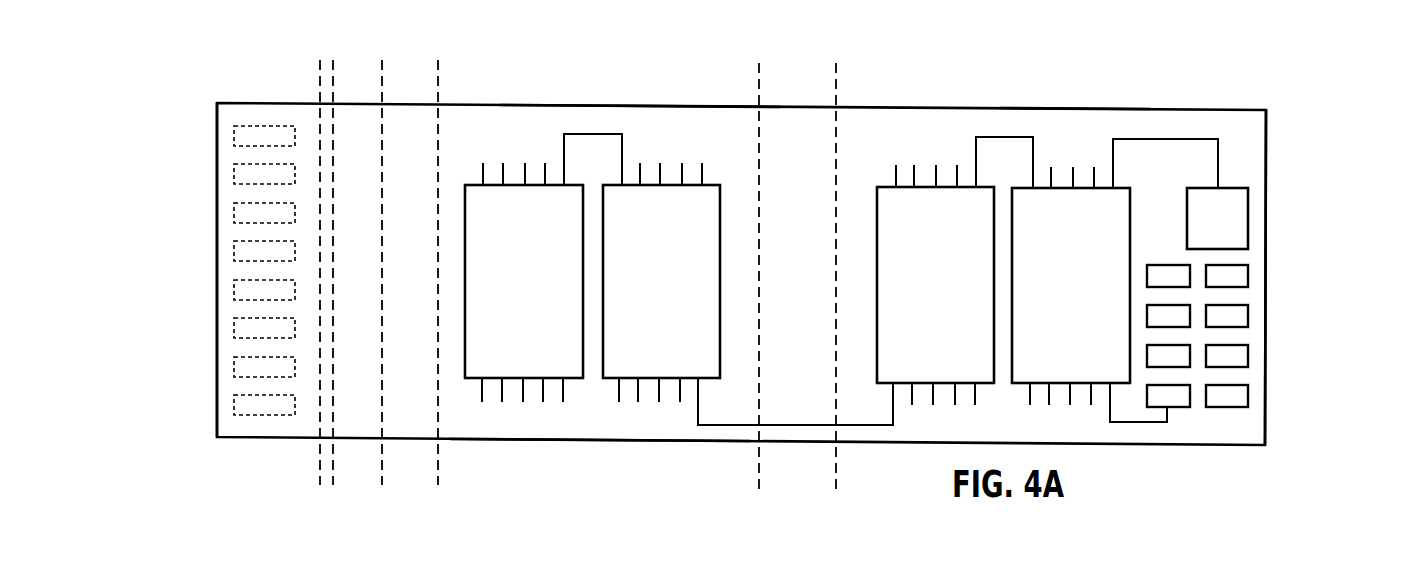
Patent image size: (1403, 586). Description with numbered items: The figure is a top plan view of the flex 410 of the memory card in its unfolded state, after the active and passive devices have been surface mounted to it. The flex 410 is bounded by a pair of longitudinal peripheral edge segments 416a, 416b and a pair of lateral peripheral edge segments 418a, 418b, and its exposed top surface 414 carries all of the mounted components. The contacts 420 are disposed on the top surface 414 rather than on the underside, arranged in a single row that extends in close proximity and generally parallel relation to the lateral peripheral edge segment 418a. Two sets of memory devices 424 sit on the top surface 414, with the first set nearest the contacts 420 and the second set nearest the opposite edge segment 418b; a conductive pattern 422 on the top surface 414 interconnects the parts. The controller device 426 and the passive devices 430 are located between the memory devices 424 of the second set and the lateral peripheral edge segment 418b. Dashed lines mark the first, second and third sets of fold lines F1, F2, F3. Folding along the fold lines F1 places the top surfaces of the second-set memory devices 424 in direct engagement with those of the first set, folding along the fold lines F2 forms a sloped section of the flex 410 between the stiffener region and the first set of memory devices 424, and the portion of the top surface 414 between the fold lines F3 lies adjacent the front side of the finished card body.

The flex 410 is at (1199, 104).
The top surface 414 is at (1080, 127).
The longitudinal peripheral edge segment 416a is at (633, 105).
The longitudinal peripheral edge segment 416b is at (590, 441).
The lateral peripheral edge segment 418a is at (216, 167).
The lateral peripheral edge segment 418b is at (1267, 155).
The contacts 420 is at (253, 292).
The conductive pattern 422 is at (802, 426).
The memory devices 424 is at (841, 278).
The controller device 426 is at (1233, 213).
The passive devices 430 is at (1242, 310).
The first set of fold lines F1 is at (836, 82).
The second set of fold lines F2 is at (438, 78).
The third set of fold lines F3 is at (333, 63).